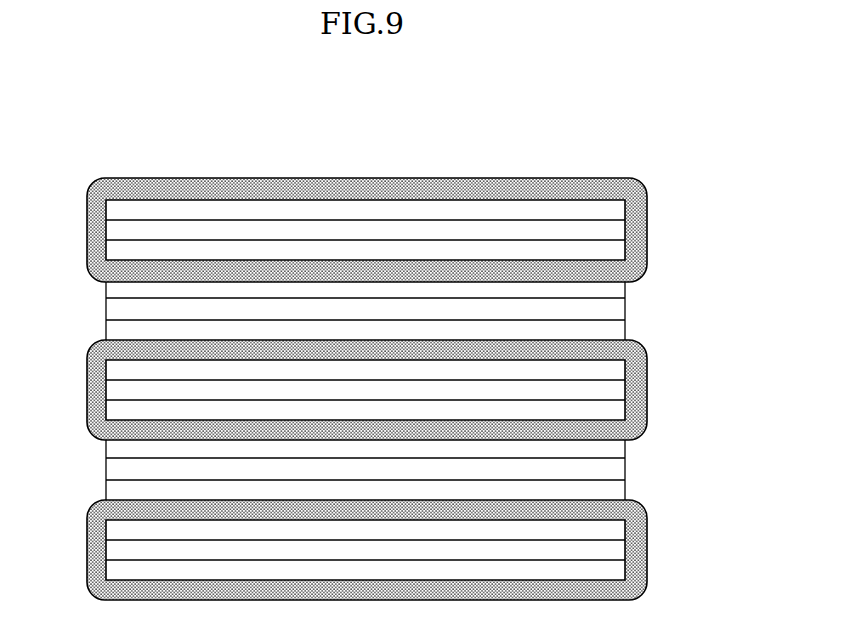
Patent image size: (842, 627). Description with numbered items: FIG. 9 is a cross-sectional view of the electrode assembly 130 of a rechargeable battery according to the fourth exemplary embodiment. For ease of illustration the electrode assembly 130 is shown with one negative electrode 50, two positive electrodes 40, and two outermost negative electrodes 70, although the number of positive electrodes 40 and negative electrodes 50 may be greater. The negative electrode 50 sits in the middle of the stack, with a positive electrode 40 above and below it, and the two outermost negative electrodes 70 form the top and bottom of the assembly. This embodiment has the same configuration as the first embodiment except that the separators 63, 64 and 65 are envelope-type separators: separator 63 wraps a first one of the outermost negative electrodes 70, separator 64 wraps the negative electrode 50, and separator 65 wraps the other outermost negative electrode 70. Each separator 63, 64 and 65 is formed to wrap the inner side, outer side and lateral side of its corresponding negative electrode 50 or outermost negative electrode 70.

The electrode assembly 130 is at (366, 176).
The outermost negative electrodes 70 is at (102, 228).
The separator 63 is at (636, 231).
The separator 64 is at (636, 389).
The separator 65 is at (636, 550).
The negative electrode 50 is at (102, 389).
The positive electrodes 40 is at (102, 309).